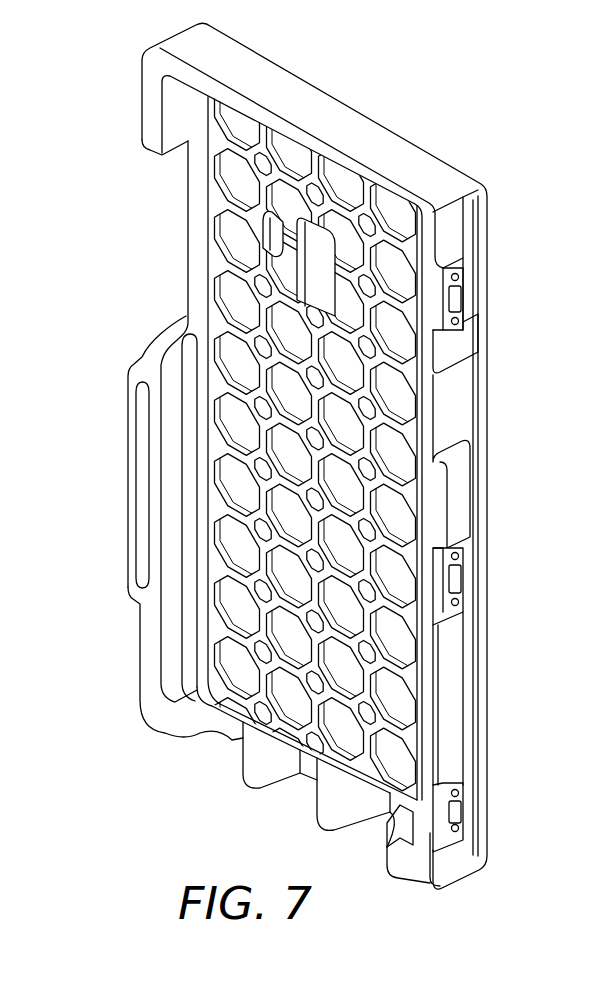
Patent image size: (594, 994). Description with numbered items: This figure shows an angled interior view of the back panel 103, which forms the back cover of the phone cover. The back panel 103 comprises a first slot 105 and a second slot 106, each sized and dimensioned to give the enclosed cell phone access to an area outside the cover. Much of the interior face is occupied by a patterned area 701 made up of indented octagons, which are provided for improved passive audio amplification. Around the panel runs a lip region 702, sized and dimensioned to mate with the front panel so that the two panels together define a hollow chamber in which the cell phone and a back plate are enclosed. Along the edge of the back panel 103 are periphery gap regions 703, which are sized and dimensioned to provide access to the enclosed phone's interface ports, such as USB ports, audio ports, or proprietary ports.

The back panel 103 is at (422, 110).
The first slot 105 is at (318, 291).
The second slot 106 is at (275, 236).
The patterned area 701 is at (408, 441).
The lip region 702 is at (174, 378).
The periphery gap regions 703 is at (370, 842).